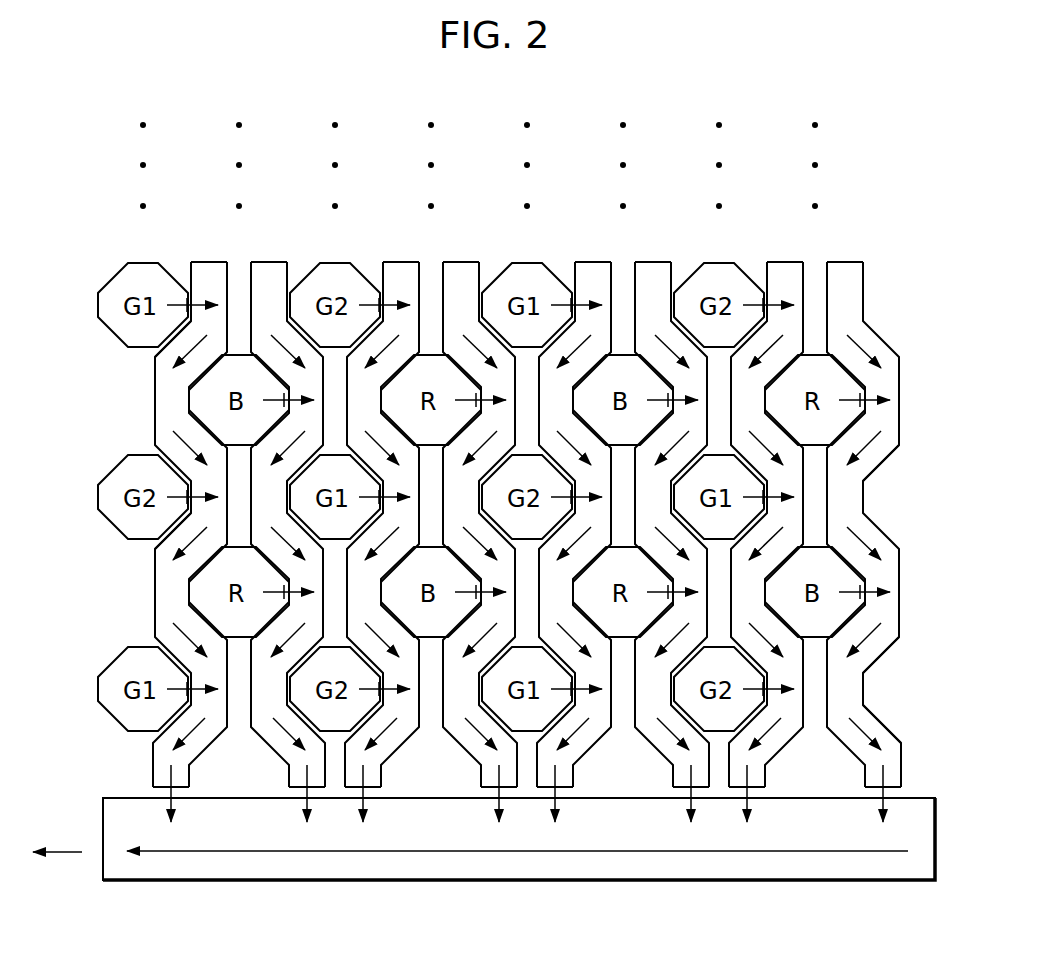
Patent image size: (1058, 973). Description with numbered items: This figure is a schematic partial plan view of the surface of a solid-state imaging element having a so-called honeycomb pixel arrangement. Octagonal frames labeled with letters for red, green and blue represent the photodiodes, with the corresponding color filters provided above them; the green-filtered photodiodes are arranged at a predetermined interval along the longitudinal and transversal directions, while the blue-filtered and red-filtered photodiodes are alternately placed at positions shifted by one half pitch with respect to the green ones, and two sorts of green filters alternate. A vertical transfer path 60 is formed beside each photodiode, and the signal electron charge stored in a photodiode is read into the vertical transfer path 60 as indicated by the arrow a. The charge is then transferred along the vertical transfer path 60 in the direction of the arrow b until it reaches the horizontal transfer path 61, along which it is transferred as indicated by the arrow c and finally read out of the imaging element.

The vertical transfer path 60 is at (205, 263).
The horizontal transfer path 61 is at (917, 856).
The arrow a is at (183, 292).
The arrow b is at (160, 350).
The arrow c is at (622, 854).